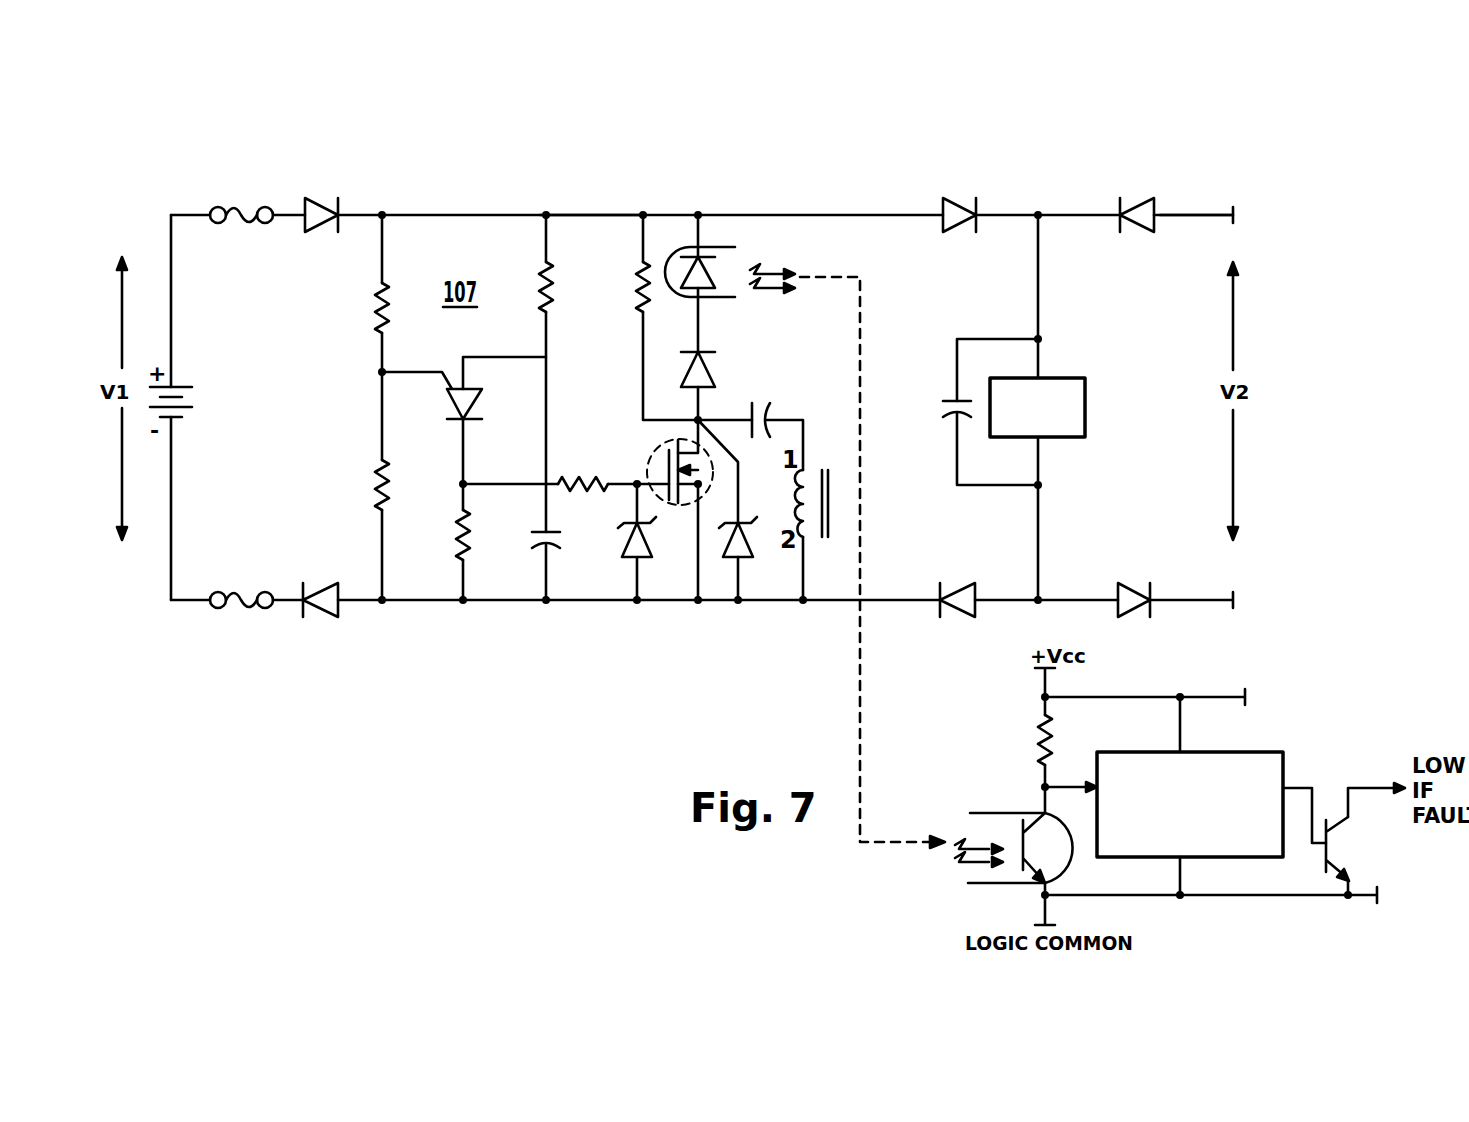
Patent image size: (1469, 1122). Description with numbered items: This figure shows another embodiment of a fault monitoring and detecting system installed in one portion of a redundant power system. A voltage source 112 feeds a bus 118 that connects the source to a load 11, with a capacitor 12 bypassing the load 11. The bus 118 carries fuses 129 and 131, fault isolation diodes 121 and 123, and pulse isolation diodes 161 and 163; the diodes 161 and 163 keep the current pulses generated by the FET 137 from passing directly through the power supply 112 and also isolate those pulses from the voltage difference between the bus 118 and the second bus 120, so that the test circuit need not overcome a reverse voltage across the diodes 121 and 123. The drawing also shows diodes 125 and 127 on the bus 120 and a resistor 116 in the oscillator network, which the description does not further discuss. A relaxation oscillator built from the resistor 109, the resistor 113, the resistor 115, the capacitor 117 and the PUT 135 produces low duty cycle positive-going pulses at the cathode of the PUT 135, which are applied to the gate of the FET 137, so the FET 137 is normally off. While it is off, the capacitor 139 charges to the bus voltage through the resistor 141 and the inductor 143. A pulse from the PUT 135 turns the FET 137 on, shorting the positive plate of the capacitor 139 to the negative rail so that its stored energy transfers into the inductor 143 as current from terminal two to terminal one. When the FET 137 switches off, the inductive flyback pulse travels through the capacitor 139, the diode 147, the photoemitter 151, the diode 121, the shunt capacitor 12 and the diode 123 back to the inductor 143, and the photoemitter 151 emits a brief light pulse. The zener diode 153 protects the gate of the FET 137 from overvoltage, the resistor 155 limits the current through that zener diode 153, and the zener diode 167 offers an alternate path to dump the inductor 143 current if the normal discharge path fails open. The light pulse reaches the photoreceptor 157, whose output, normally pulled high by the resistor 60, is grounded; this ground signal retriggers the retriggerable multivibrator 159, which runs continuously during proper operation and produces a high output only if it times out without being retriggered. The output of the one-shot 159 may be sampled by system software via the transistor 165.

The load 11 is at (1066, 378).
The capacitor 12 is at (950, 416).
The resistor 60 is at (1040, 735).
The resistor 109 is at (551, 290).
The voltage source 112 is at (180, 387).
The resistor 113 is at (375, 310).
The resistor 115 is at (375, 480).
The resistor 116 is at (456, 540).
The capacitor 117 is at (534, 535).
The bus 118 is at (578, 213).
The bus 120 is at (1215, 217).
The fault isolation diode 121 is at (962, 198).
The fault isolation diode 123 is at (957, 618).
The diode 125 is at (1136, 198).
The diode 127 is at (1125, 590).
The fuse 129 is at (241, 206).
The fuse 131 is at (248, 608).
The PUT 135 is at (452, 408).
The FET 137 is at (713, 477).
The capacitor 139 is at (766, 410).
The resistor 141 is at (639, 300).
The inductor 143 is at (835, 490).
The diode 147 is at (712, 372).
The photoemitter 151 is at (733, 262).
The zener diode 153 is at (620, 556).
The resistor 155 is at (580, 478).
The photoreceptor 157 is at (990, 813).
The retriggerable multivibrator 159 is at (1250, 752).
The pulse isolation diode 161 is at (320, 199).
The pulse isolation diode 163 is at (330, 618).
The transistor 165 is at (1352, 880).
The zener diode 167 is at (745, 565).